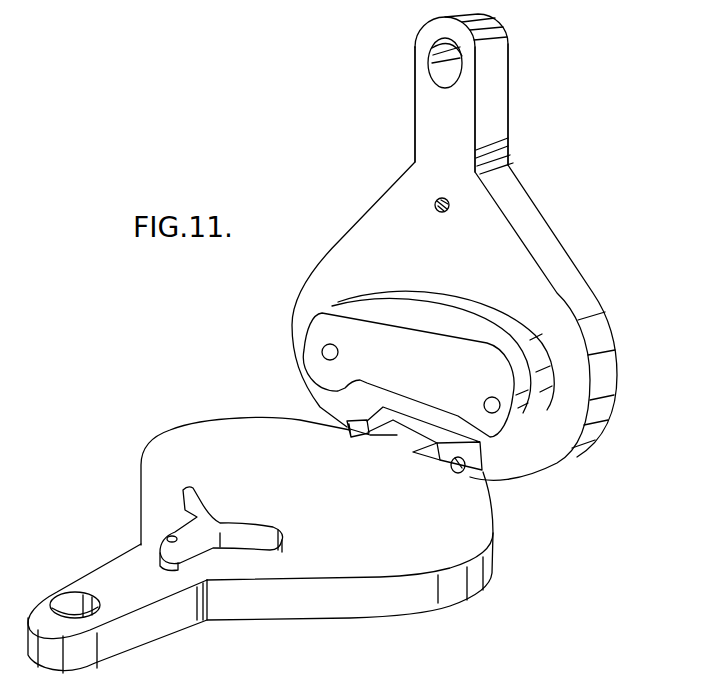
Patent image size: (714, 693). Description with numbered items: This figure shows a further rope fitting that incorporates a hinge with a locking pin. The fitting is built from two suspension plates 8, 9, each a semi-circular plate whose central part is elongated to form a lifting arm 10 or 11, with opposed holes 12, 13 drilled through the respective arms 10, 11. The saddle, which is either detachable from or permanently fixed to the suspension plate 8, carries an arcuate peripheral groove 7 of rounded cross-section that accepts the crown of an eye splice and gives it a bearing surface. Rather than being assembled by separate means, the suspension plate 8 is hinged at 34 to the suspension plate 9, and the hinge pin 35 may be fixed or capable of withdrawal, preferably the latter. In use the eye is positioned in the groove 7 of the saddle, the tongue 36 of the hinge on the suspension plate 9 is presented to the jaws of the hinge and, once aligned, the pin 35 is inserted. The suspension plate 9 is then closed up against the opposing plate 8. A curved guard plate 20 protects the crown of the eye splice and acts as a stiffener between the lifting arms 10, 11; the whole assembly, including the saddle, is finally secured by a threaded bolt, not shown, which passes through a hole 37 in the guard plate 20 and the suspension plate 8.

The arcuate peripheral groove 7 is at (497, 335).
The suspension plate 8 is at (540, 252).
The suspension plate 9 is at (165, 480).
The arm 10 is at (140, 628).
The arm 11 is at (488, 123).
The hole 12 is at (73, 610).
The hole 13 is at (445, 68).
The guard plate 20 is at (250, 530).
The hinge 34 is at (430, 455).
The hinge pin 35 is at (462, 468).
The tongue 36 is at (353, 423).
The hole 37 is at (168, 541).